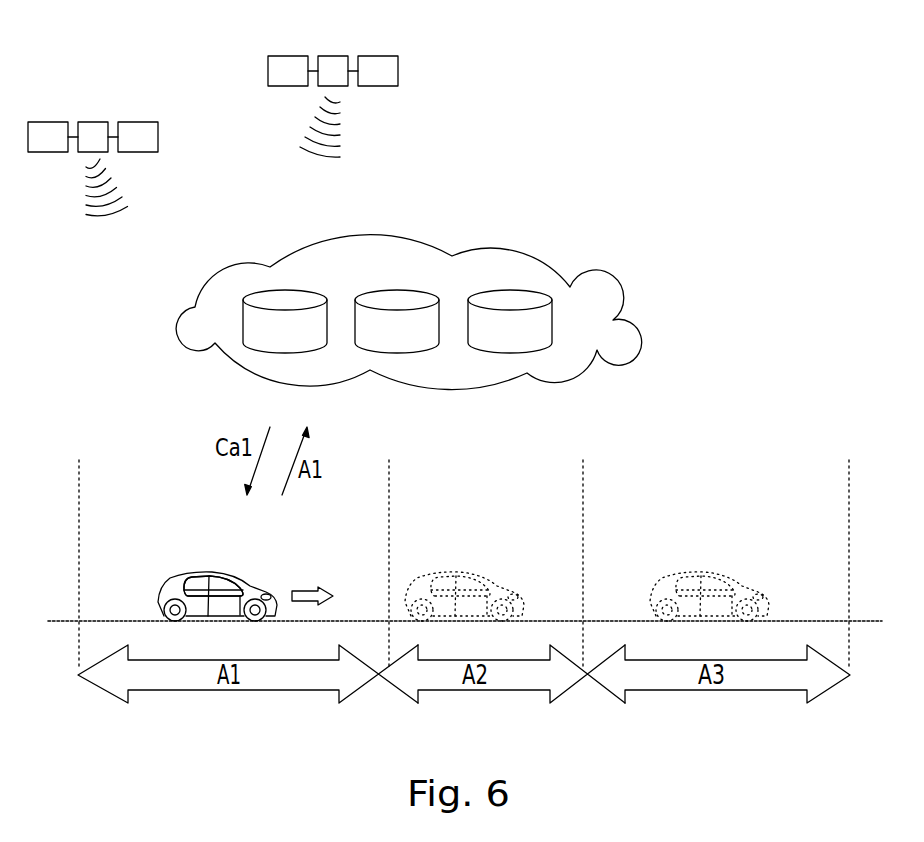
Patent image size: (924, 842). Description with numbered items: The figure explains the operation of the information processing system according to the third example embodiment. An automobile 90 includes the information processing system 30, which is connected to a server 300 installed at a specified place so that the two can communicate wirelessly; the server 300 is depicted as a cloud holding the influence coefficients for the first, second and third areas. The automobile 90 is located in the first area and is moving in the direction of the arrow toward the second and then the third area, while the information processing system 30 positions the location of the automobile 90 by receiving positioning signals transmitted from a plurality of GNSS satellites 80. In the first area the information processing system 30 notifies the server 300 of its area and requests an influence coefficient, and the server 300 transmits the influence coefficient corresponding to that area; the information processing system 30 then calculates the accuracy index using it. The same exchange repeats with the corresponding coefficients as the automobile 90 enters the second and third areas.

The GNSS satellites 80 is at (88, 78).
The server 300 is at (445, 240).
The automobile 90 is at (213, 567).
The information processing system 30 is at (209, 525).